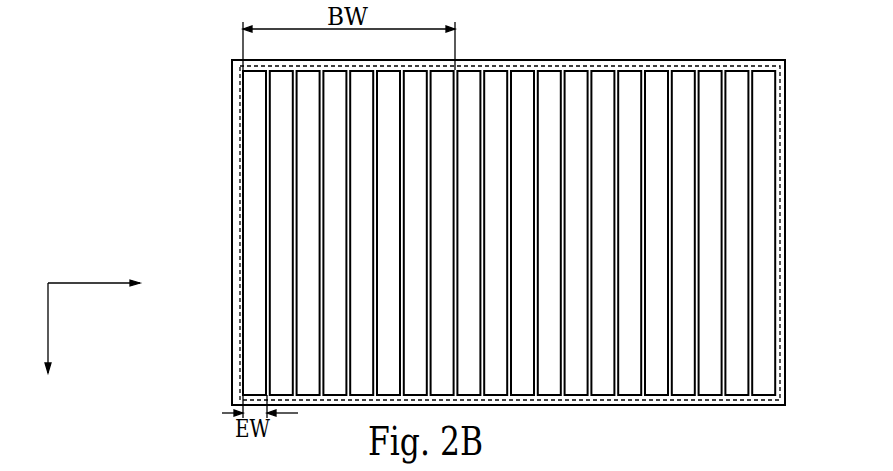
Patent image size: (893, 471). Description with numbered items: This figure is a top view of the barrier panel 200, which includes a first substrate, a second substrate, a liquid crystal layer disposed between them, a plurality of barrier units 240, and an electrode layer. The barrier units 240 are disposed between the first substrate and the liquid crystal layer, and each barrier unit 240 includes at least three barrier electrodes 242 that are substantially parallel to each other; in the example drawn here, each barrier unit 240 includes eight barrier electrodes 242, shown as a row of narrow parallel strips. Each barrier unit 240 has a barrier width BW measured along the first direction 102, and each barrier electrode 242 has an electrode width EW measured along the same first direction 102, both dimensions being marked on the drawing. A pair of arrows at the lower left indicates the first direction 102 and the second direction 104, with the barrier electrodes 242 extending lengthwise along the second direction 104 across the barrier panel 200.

The barrier panel 200 is at (98, 76).
The barrier units 240 is at (240, 138).
The barrier electrodes 242 is at (258, 110).
The first direction 102 is at (119, 283).
The second direction 104 is at (55, 348).